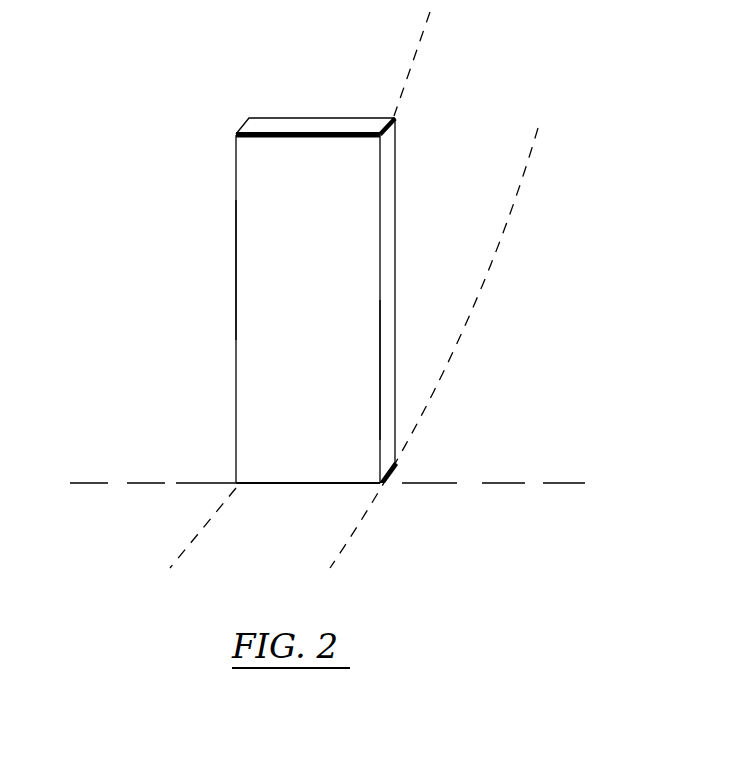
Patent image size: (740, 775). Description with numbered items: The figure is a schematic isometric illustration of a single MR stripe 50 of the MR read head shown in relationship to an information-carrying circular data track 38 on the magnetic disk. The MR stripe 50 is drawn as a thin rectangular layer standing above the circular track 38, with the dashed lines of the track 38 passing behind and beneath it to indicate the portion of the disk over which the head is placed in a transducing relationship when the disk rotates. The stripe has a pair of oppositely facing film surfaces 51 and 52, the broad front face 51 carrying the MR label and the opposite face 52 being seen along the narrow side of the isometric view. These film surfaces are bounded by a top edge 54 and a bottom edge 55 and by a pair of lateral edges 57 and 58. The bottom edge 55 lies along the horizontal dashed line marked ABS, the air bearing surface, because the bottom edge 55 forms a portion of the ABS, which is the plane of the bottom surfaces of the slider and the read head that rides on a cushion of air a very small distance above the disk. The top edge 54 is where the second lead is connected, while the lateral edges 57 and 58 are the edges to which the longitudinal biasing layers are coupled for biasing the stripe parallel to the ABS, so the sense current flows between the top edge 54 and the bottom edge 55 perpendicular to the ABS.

The MR stripe 50 is at (305, 313).
The film surface 51 is at (250, 397).
The film surface 52 is at (396, 265).
The top edge 54 is at (301, 130).
The bottom edge 55 is at (303, 484).
The lateral edge 57 is at (386, 362).
The lateral edge 58 is at (236, 280).
The circular data track 38 is at (483, 223).
The air bearing surface ABS is at (448, 485).